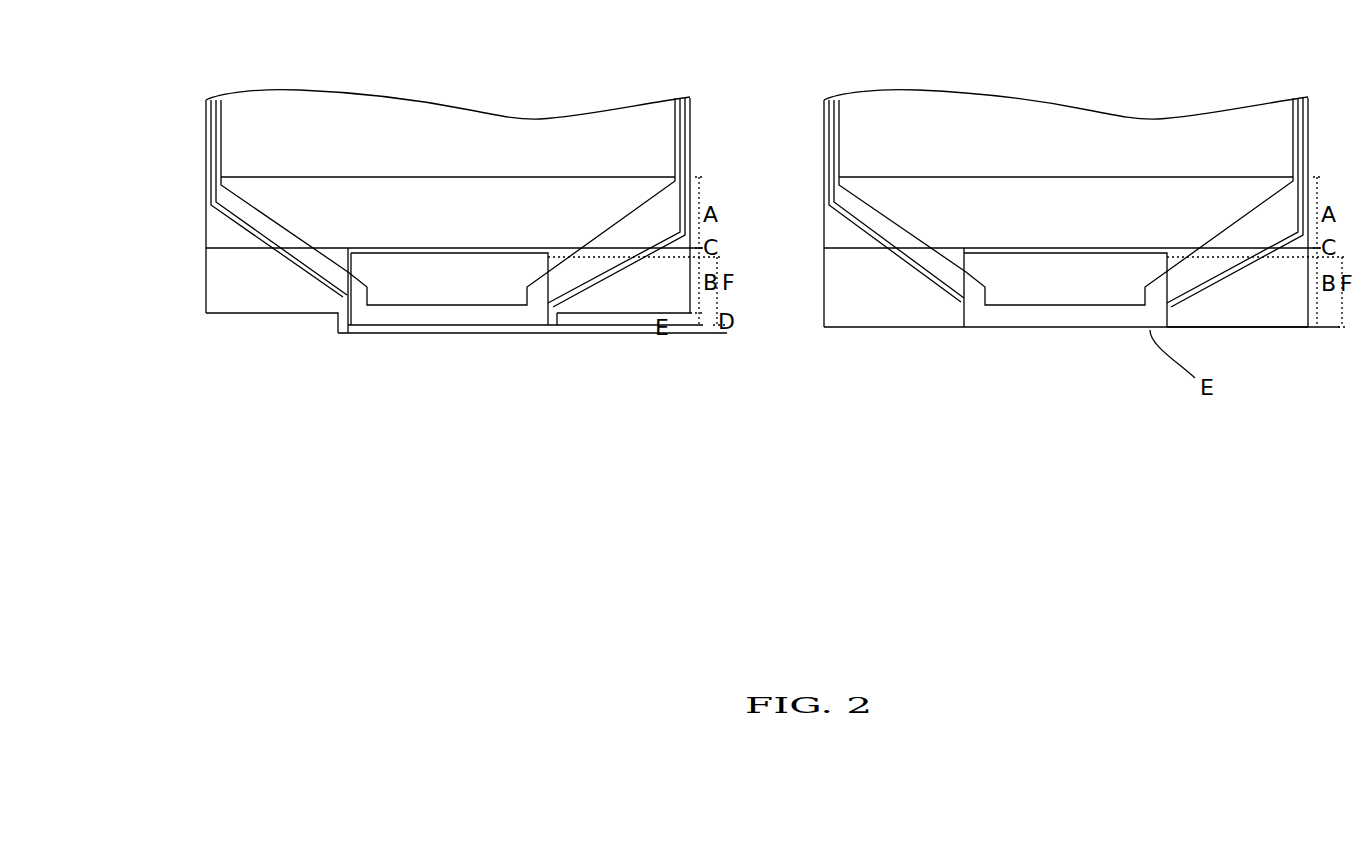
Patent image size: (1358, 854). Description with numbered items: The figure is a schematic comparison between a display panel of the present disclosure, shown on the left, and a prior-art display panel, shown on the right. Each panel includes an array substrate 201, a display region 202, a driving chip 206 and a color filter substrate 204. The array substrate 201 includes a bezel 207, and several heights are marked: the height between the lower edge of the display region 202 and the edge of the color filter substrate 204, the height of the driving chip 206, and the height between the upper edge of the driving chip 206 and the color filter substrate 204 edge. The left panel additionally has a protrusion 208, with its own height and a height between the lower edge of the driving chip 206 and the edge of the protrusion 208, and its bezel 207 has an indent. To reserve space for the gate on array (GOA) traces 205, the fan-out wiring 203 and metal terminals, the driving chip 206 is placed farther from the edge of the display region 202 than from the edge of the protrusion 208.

The array substrate 201 is at (206, 235).
The display region 202 is at (358, 122).
The fan-out wiring 203 is at (293, 200).
The color filter substrate 204 is at (206, 250).
The gate on array (GOA) traces 205 is at (206, 145).
The driving chip 206 is at (495, 307).
The bezel 207 is at (232, 288).
The protrusion 208 is at (377, 333).